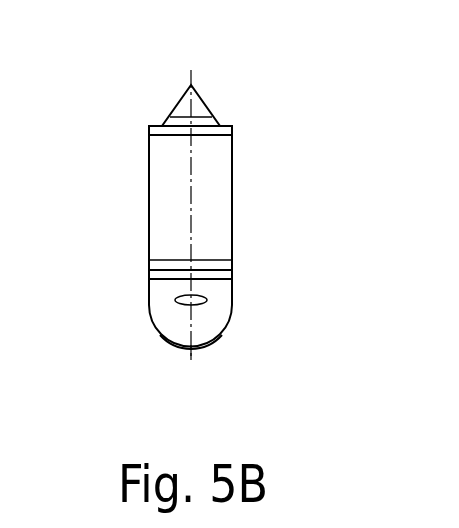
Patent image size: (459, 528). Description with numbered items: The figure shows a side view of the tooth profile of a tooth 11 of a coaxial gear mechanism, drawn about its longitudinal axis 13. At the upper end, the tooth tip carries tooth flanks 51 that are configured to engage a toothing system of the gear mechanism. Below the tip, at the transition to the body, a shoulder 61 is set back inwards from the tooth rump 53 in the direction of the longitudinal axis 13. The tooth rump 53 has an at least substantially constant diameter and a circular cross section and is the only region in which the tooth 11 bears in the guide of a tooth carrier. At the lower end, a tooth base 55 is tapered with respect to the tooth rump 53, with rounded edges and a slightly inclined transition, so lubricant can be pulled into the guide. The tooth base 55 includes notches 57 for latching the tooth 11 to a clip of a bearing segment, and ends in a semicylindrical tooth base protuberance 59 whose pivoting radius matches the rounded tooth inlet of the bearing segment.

The tooth 11 is at (118, 125).
The longitudinal axis 13 is at (192, 355).
The tooth flanks 51 is at (198, 92).
The tooth rump 53 is at (232, 197).
The tooth base 55 is at (232, 297).
The notches 57 is at (173, 298).
The tooth base protuberance 59 is at (169, 343).
The shoulder 61 is at (233, 125).